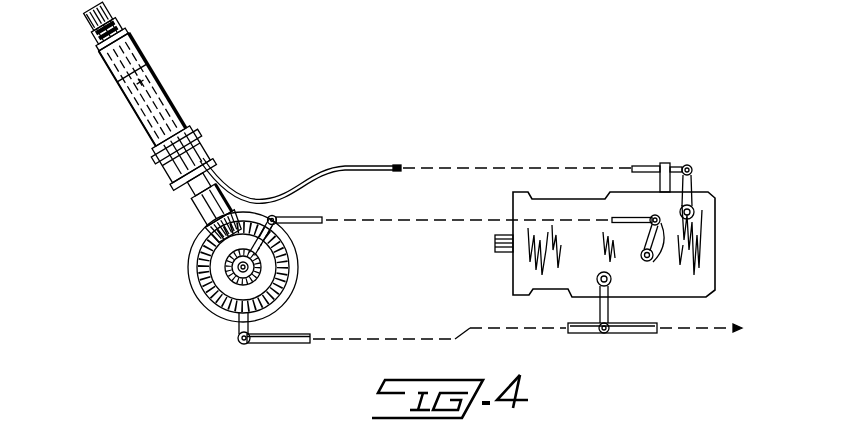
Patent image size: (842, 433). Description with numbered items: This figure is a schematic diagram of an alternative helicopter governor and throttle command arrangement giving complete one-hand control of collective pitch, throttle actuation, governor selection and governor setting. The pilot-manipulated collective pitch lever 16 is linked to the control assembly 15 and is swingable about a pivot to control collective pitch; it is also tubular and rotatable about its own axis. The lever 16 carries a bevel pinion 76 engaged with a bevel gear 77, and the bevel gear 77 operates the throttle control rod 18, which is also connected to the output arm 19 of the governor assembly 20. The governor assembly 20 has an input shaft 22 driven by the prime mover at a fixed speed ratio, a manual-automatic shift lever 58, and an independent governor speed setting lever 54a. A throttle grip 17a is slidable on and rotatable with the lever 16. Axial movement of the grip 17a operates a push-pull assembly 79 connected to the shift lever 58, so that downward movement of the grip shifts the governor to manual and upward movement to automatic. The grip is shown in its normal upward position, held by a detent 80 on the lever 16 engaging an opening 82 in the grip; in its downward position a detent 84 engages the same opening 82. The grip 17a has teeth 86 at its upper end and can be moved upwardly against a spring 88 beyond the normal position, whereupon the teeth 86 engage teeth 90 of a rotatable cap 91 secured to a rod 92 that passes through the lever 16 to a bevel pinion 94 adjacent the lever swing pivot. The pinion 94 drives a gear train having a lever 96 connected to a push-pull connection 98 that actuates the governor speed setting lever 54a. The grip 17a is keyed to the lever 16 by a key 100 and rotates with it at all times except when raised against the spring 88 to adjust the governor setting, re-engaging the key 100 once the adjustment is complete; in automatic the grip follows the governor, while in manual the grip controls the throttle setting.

The control assembly 15 is at (184, 294).
The collective pitch lever 16 is at (191, 207).
The throttle grip 17a is at (128, 115).
The throttle control rod 18 is at (292, 331).
The output arm 19 is at (609, 308).
The governor assembly 20 is at (718, 238).
The input shaft 22 is at (494, 242).
The governor speed setting lever 54a is at (666, 256).
The manual-automatic shift lever 58 is at (696, 181).
The bevel pinion 76 is at (214, 267).
The bevel gear 77 is at (221, 305).
The push-pull assembly 79 is at (252, 199).
The detent 80 is at (145, 66).
The grip opening 82 is at (152, 80).
The detent 84 is at (170, 108).
The teeth 86 is at (121, 41).
The spring 88 is at (112, 40).
The teeth 90 is at (86, 56).
The rotatable cap 91 is at (94, 30).
The rod 92 is at (222, 182).
The bevel pinion 94 is at (291, 243).
The lever 96 is at (290, 216).
The push-pull connection 98 is at (464, 207).
The key 100 is at (153, 160).